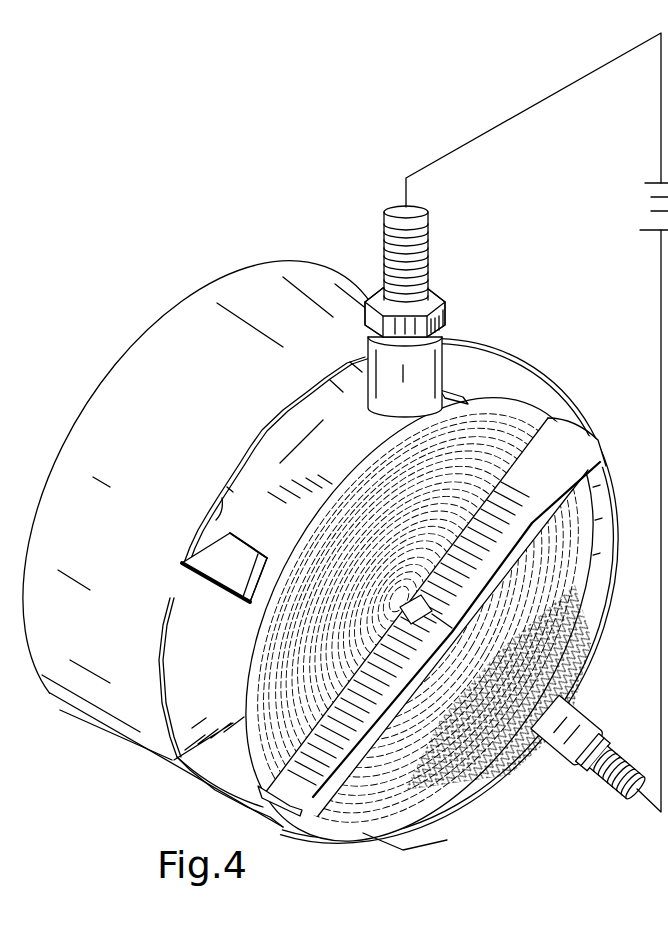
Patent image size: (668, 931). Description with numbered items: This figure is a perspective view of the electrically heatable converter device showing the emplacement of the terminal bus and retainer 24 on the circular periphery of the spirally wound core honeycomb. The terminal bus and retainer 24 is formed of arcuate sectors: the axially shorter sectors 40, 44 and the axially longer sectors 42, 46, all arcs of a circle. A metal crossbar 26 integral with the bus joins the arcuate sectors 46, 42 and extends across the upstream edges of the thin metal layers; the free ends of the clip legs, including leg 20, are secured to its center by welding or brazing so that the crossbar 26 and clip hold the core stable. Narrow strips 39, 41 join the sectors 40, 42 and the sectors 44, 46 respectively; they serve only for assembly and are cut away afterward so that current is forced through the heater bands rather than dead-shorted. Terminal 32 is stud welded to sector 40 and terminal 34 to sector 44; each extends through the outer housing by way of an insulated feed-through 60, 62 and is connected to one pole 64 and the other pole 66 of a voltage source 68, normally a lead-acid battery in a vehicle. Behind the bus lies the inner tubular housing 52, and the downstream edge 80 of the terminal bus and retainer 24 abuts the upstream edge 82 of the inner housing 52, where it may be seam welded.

The leg of U-shaped clip 20 is at (426, 608).
The terminal bus and retainer 24 is at (603, 427).
The metal crossbar 26 is at (330, 757).
The terminal 32 is at (418, 250).
The terminal 34 is at (610, 785).
The narrow strip 39 is at (277, 580).
The axially shorter sector 40 is at (319, 463).
The narrow strip 41 is at (568, 645).
The axially longer sector 42 is at (179, 673).
The axially shorter sector 44 is at (467, 787).
The axially longer sector 46 is at (597, 530).
The inner tubular housing 52 is at (143, 353).
The insulated feed-through 60 is at (455, 330).
The insulated feed-through 62 is at (603, 691).
The pole of voltage source 64 is at (658, 180).
The pole of voltage source 66 is at (650, 232).
The voltage source 68 is at (614, 213).
The downstream edge of terminal bus and retainer 80 is at (157, 660).
The upstream edge of inner housing 82 is at (216, 520).